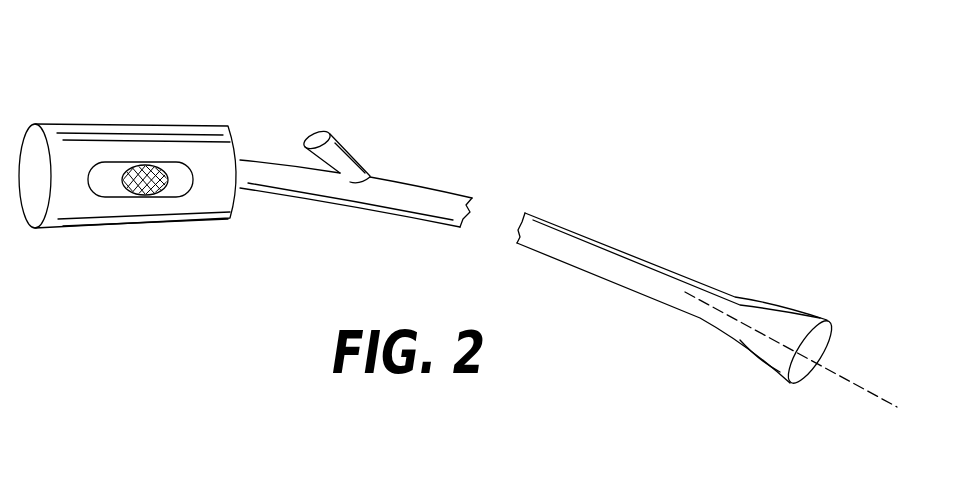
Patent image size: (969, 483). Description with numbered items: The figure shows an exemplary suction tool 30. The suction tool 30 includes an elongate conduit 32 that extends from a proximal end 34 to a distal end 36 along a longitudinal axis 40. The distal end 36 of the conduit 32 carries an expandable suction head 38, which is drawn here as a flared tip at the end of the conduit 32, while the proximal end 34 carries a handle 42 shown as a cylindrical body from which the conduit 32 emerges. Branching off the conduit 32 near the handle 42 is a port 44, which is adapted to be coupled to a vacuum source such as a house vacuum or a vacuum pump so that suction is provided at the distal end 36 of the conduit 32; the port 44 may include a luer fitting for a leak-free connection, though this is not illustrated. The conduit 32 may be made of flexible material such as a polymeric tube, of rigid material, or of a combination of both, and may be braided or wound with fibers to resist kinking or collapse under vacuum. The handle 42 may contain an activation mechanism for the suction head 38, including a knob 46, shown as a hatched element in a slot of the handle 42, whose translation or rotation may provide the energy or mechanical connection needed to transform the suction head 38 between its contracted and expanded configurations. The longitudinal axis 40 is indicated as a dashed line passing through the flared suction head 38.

The suction tool 30 is at (490, 141).
The elongate conduit 32 is at (542, 217).
The proximal end 34 is at (259, 85).
The distal end 36 is at (828, 278).
The expandable suction head 38 is at (763, 348).
The longitudinal axis 40 is at (857, 383).
The handle 42 is at (120, 148).
The port 44 is at (333, 145).
The knob 46 is at (128, 197).